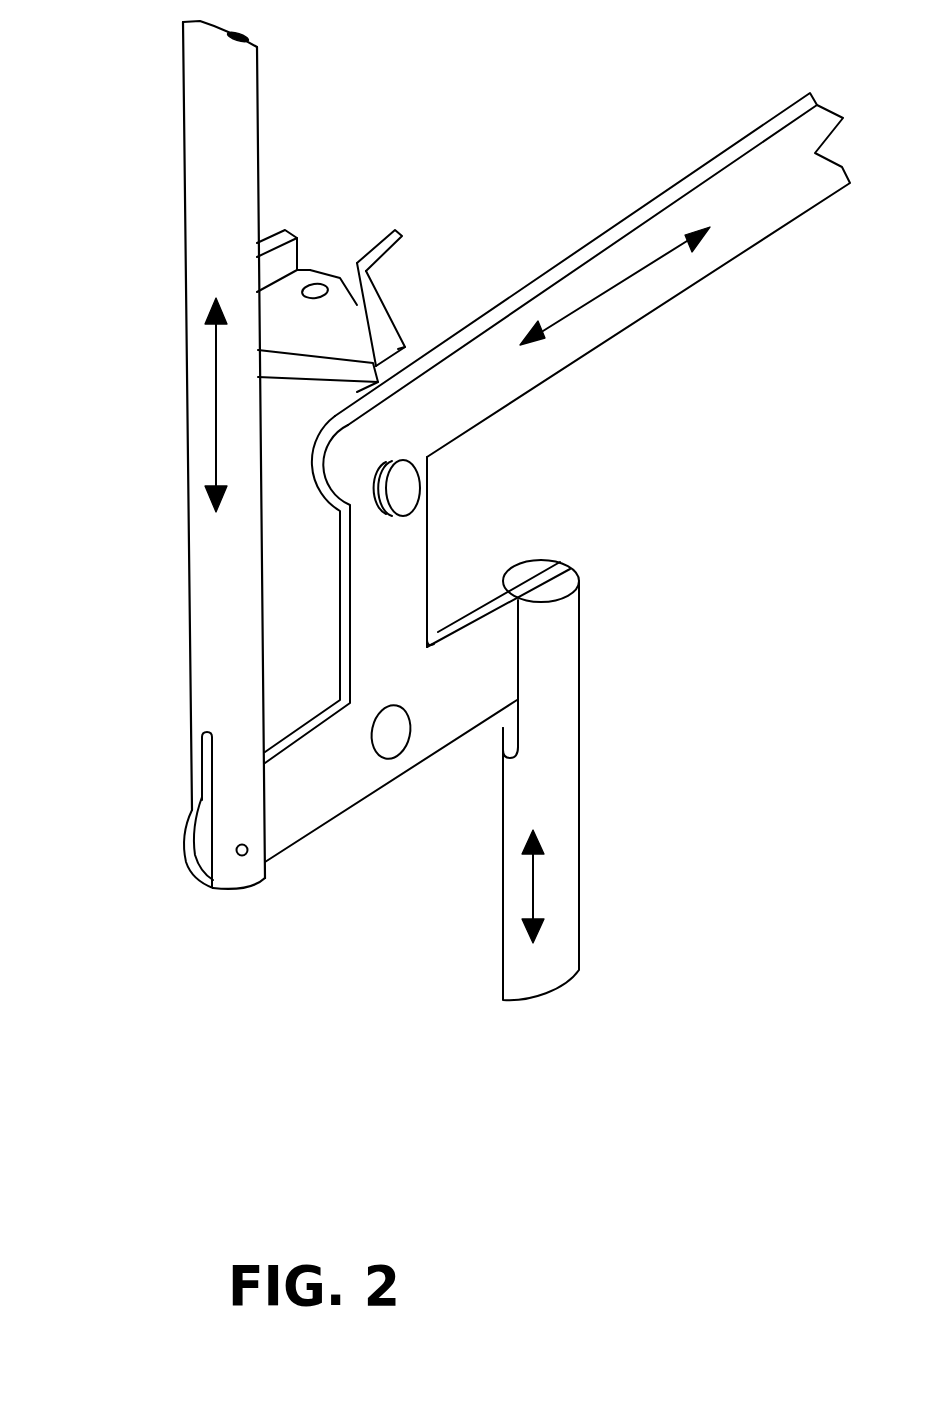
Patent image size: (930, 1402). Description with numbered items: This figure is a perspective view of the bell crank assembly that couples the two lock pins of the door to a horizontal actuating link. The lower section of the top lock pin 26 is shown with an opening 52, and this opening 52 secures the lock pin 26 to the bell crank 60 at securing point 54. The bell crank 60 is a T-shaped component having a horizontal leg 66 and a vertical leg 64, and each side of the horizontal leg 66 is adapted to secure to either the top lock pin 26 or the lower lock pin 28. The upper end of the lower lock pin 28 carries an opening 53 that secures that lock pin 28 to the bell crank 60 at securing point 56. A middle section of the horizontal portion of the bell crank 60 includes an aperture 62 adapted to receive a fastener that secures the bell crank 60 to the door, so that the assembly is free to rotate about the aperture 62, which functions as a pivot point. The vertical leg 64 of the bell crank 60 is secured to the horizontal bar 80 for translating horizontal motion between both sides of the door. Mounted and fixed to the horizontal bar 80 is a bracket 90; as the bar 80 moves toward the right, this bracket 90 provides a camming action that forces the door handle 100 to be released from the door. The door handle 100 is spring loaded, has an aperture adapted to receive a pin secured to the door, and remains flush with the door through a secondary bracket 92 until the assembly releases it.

The top lock pin 26 is at (183, 174).
The lower lock pin 28 is at (548, 963).
The opening 52 is at (192, 778).
The opening 53 is at (505, 728).
The securing point 54 is at (242, 856).
The securing point 56 is at (569, 636).
The bell crank 60 is at (437, 720).
The aperture 62 is at (390, 705).
The vertical leg 64 is at (435, 637).
The horizontal leg 66 is at (490, 747).
The horizontal bar 80 is at (660, 288).
The bracket 90 is at (388, 300).
The secondary bracket 92 is at (287, 230).
The door handle 100 is at (298, 342).